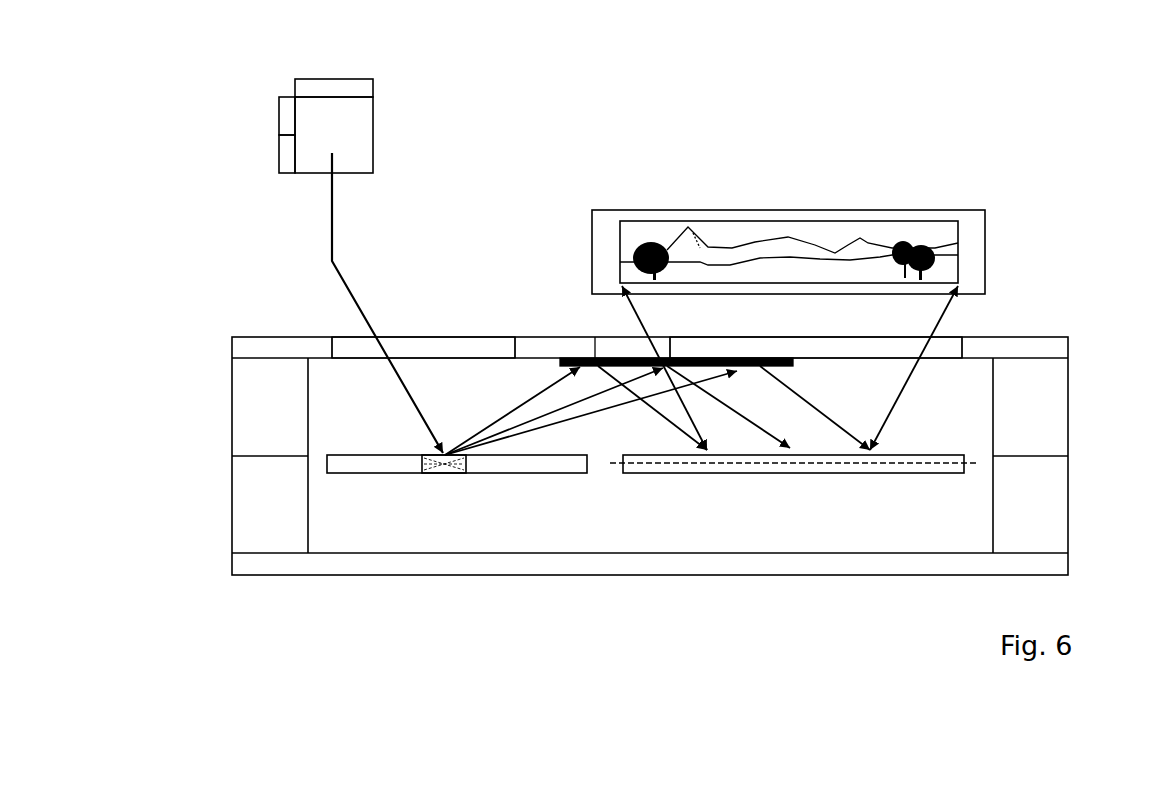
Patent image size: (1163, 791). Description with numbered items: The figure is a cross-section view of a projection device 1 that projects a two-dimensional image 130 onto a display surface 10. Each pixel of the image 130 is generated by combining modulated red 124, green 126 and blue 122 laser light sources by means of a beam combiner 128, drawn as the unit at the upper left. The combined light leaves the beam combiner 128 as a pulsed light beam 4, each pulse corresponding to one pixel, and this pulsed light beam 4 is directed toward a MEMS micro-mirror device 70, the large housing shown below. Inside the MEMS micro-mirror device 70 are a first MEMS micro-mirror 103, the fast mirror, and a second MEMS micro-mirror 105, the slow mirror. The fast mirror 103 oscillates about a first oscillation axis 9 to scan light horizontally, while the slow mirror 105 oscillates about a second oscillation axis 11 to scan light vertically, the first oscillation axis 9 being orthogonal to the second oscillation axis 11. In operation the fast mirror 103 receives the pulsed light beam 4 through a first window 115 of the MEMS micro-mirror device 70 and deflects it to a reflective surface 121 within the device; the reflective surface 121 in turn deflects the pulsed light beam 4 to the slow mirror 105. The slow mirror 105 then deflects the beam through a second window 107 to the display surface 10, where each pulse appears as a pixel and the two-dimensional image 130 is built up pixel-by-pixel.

The projection device 1 is at (620, 107).
The pulsed light beam 4 is at (327, 224).
The first oscillation axis 9 is at (448, 478).
The display surface 10 is at (985, 283).
The second oscillation axis 11 is at (978, 478).
The MEMS micro-mirror device 70 is at (1070, 501).
The first MEMS micro-mirror 103 is at (380, 478).
The second MEMS micro-mirror 105 is at (910, 478).
The second window 107 is at (805, 337).
The first window 115 is at (437, 338).
The reflective surface 121 is at (558, 370).
The blue laser light source 122 is at (285, 158).
The red laser light source 124 is at (285, 110).
The green laser light source 126 is at (370, 92).
The beam combiner 128 is at (365, 145).
The 2-D image 130 is at (960, 240).